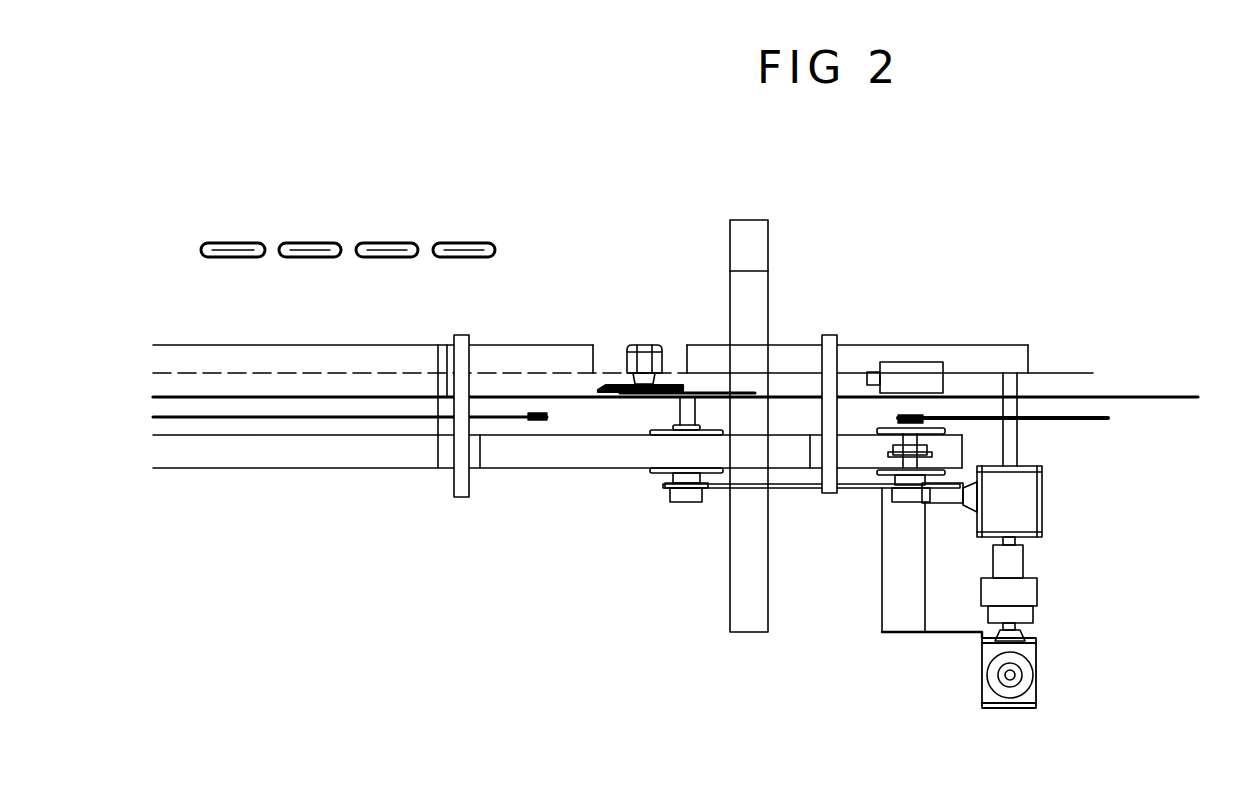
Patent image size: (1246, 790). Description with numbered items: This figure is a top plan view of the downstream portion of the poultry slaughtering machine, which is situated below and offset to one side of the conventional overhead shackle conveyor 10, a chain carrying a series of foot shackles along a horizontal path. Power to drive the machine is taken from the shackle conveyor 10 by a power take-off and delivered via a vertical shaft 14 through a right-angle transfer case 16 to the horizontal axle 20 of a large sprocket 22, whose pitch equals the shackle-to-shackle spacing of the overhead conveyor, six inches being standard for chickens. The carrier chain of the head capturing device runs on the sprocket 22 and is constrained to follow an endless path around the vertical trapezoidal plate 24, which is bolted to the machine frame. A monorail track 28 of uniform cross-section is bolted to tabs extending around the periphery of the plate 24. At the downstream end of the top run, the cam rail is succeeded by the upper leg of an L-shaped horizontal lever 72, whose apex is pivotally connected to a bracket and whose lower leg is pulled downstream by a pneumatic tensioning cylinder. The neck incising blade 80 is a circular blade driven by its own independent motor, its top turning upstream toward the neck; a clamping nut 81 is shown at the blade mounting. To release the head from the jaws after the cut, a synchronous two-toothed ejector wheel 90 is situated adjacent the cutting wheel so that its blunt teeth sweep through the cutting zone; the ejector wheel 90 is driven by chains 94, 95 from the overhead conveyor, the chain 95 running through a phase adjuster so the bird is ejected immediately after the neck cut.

The overhead shackle conveyor 10 is at (396, 232).
The vertical shaft 14 is at (1020, 668).
The right-angle transfer case 16 is at (1037, 703).
The horizontal axle 20 is at (1020, 447).
The large sprocket 22 is at (1112, 420).
The trapezoidal plate 24 is at (1095, 372).
The monorail track 28 is at (1138, 395).
The L-shaped horizontal lever 72 is at (553, 421).
The neck incising blade 80 is at (603, 383).
The clamping nut 81 is at (640, 346).
The ejector wheel 90 is at (747, 387).
The chain 94 is at (790, 495).
The chain 95 is at (883, 455).